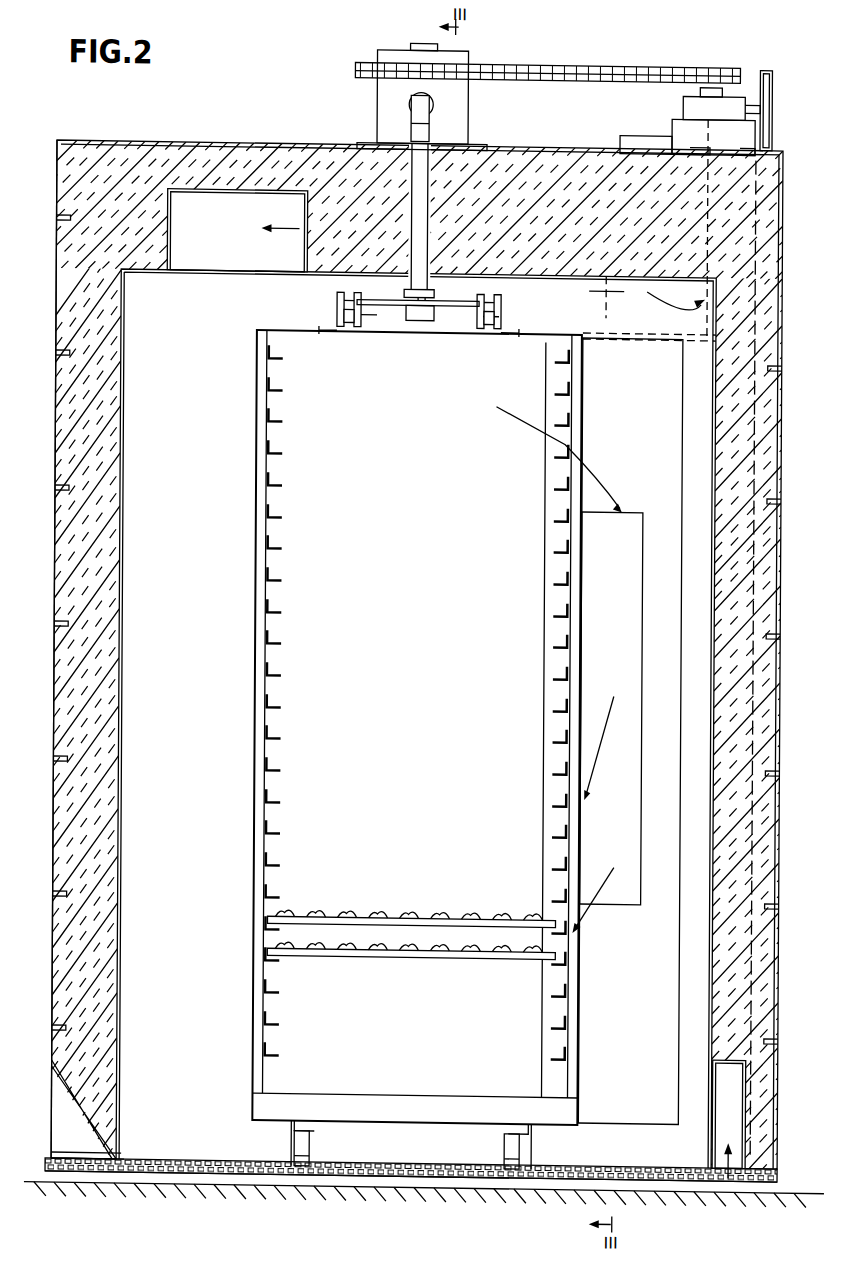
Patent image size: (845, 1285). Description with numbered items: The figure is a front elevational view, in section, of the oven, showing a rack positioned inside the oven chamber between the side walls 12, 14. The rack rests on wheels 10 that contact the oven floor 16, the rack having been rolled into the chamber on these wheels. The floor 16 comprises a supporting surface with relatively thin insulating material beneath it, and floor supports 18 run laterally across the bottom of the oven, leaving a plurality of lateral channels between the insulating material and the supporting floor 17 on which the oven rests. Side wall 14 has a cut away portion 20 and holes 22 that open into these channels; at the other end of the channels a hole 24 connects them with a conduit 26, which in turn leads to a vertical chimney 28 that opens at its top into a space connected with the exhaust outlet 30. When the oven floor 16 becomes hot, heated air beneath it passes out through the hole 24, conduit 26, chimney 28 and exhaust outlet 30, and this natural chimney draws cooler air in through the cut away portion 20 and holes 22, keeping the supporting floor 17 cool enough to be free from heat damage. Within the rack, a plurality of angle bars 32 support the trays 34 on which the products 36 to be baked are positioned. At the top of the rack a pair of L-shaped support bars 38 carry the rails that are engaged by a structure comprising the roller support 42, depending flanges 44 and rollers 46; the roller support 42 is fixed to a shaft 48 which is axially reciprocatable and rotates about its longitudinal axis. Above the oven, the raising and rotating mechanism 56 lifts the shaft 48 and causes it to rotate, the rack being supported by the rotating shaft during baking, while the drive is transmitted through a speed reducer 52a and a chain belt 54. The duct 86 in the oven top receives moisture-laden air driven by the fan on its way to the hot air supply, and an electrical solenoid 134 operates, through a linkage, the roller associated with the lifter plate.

The wheels 10 is at (318, 1142).
The side wall 12 is at (773, 687).
The side wall 14 is at (78, 838).
The floor 16 is at (461, 1172).
The supporting floor 17 is at (400, 1182).
The floor supports 18 is at (645, 1182).
The cut away portion 20 is at (83, 1145).
The holes 22 is at (115, 1177).
The hole 24 is at (738, 1172).
The conduit 26 is at (738, 1090).
The vertical chimney 28 is at (762, 786).
The exhaust outlet 30 is at (634, 120).
The angle bars 32 is at (552, 613).
The trays 34 is at (457, 913).
The products 36 is at (407, 910).
The L-shaped support bars 38 is at (337, 304).
The roller support 42 is at (393, 302).
The depending flanges 44 is at (365, 303).
The rollers 46 is at (350, 319).
The shaft 48 is at (410, 286).
The speed reducer 52a is at (733, 76).
The chain belt 54 is at (610, 50).
The raising and rotating mechanism 56 is at (470, 91).
The duct 86 is at (214, 236).
The electrical solenoid 134 is at (424, 86).